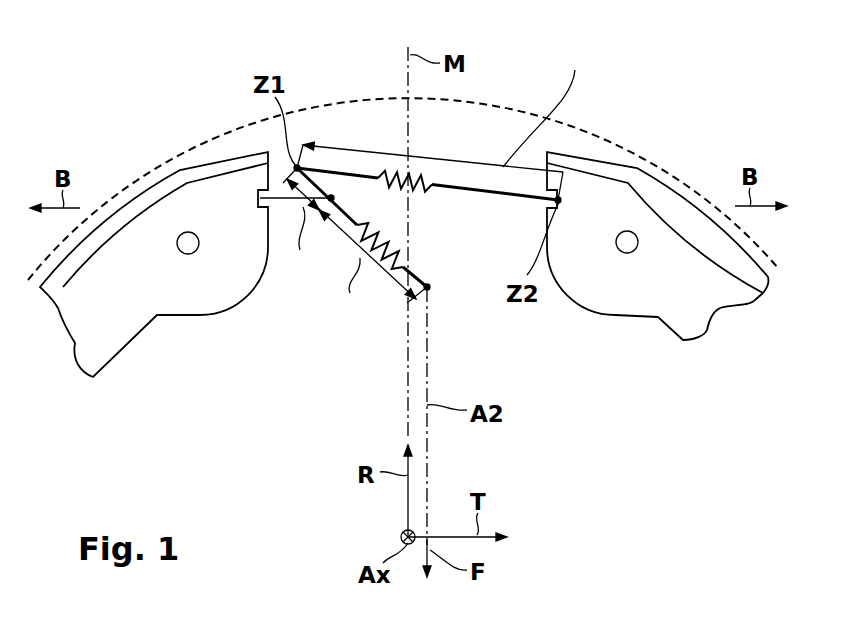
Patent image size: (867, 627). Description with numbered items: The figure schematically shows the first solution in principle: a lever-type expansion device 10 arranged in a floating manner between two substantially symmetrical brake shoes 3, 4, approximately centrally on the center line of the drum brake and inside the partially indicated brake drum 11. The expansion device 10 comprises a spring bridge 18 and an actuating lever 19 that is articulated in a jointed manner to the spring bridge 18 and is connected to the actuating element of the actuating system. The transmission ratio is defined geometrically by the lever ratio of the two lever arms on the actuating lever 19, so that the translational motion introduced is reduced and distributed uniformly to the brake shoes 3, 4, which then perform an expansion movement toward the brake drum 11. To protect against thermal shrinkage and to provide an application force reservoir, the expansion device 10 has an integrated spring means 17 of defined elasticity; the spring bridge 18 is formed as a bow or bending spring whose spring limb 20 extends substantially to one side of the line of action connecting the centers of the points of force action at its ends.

The brake shoe 3 is at (162, 273).
The brake shoe 4 is at (653, 292).
The expansion device 10 is at (420, 194).
The brake drum 11 is at (578, 128).
The spring means 17 is at (418, 167).
The spring bridge 18 is at (350, 175).
The actuating lever 19 is at (337, 228).
The spring limb 20 is at (393, 252).